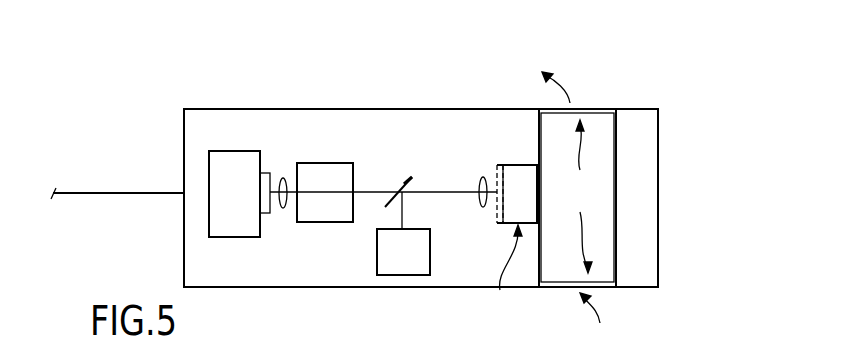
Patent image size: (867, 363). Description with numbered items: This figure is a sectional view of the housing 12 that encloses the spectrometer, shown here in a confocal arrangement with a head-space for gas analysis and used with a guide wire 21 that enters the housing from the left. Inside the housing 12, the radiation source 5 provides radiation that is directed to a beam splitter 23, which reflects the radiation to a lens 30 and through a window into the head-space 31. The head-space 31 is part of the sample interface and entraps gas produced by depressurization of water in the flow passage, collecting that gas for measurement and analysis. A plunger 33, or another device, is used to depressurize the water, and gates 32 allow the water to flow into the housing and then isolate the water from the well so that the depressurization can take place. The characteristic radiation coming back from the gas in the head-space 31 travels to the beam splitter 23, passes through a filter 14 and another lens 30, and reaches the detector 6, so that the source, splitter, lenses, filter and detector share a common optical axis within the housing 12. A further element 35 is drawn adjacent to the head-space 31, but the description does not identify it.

The housing 12 is at (325, 108).
The guide wire 21 is at (93, 190).
The detector 6 is at (223, 196).
The lens 30 is at (283, 177).
The filter 14 is at (356, 157).
The beam splitter 23 is at (412, 177).
The radiation source 5 is at (410, 265).
The head-space 31 is at (518, 173).
The filter 35 is at (497, 207).
The plunger 33 is at (503, 275).
The gates 32 is at (545, 206).